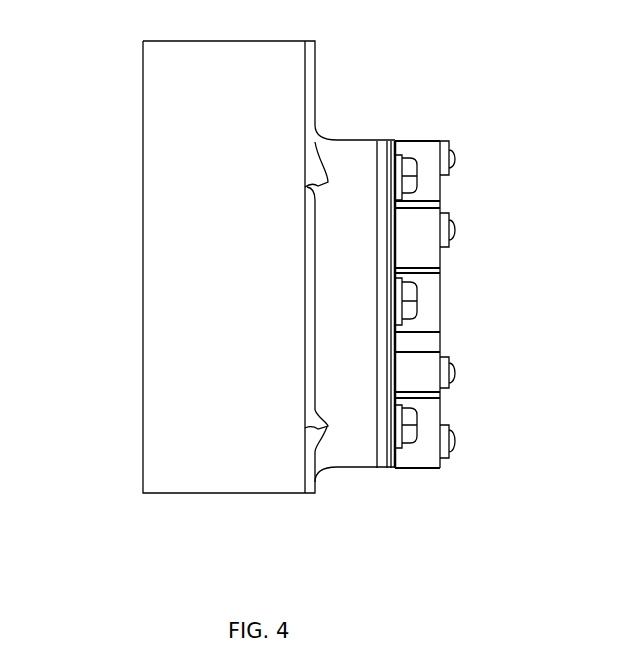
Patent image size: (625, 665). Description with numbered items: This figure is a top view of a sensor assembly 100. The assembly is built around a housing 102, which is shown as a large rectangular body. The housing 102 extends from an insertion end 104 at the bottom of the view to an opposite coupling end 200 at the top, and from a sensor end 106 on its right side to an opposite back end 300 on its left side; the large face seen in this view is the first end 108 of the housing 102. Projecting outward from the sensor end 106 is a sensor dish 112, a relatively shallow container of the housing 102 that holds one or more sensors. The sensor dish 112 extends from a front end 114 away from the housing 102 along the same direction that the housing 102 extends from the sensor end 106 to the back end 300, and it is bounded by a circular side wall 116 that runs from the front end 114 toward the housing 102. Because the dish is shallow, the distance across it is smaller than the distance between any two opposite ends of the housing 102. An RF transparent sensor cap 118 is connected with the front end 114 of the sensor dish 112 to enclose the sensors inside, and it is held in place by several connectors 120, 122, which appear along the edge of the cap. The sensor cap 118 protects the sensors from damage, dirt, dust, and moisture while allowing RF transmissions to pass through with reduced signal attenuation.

The sensor assembly 100 is at (443, 532).
The housing 102 is at (315, 40).
The insertion end 104 is at (212, 500).
The sensor end 106 is at (320, 80).
The first end 108 is at (181, 273).
The sensor dish 112 is at (522, 140).
The front end 114 is at (398, 236).
The circular side wall 116 is at (370, 140).
The RF transparent sensor cap 118 is at (427, 140).
The connector 120 is at (453, 157).
The connector 122 is at (415, 187).
The coupling end 200 is at (233, 33).
The back end 300 is at (136, 78).